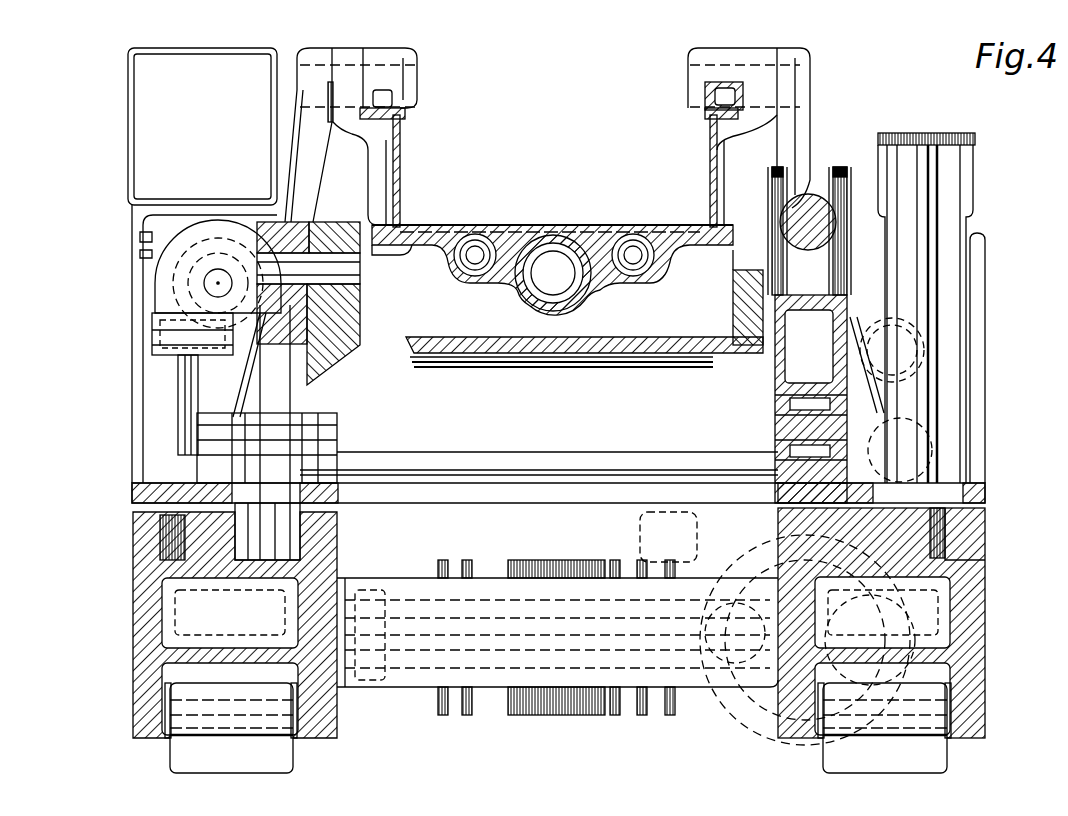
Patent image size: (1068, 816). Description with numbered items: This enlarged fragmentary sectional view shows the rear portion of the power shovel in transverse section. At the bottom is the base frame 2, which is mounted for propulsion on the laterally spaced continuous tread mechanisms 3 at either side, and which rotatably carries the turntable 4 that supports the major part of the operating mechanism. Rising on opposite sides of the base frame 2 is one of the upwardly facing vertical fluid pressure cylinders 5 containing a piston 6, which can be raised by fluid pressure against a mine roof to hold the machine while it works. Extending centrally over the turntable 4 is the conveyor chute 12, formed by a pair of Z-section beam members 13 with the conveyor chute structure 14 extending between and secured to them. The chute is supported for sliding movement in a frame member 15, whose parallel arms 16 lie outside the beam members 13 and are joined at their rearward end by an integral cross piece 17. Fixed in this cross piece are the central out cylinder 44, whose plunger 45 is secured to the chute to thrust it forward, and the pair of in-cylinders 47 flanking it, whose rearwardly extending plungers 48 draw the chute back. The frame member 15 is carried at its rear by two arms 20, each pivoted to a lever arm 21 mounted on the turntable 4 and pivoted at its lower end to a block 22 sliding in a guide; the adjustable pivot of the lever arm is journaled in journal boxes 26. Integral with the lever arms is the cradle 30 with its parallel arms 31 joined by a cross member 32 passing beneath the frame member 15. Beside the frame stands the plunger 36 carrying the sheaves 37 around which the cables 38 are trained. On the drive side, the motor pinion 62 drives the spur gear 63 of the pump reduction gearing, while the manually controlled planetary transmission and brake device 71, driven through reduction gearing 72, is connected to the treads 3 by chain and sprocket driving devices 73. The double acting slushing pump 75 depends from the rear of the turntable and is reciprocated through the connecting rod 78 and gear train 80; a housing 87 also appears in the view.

The base frame 2 is at (340, 700).
The continuous tread mechanisms 3 is at (185, 752).
The turntable 4 is at (132, 493).
The fluid pressure cylinders 5 is at (970, 194).
The pistons 6 is at (960, 135).
The conveyor chute 12 is at (552, 234).
The beam members 13 is at (400, 175).
The conveyor chute structure 14 is at (591, 214).
The frame member 15 is at (422, 248).
The parallel arms 16 is at (415, 82).
The cross piece 17 is at (472, 288).
The arms 20 is at (303, 44).
The lever arm 21 is at (200, 375).
The block 22 is at (775, 425).
The journal boxes 26 is at (180, 410).
The cradle 30 is at (634, 369).
The parallel arms 31 is at (347, 205).
The cross member 32 is at (532, 371).
The plunger 36 is at (810, 192).
The sheaves 37 is at (850, 176).
The cables 38 is at (840, 165).
The fluid pressure cylinder 44 is at (528, 298).
The plunger 45 is at (585, 292).
The fluid pressure cylinders 47 is at (455, 258).
The plungers 48 is at (460, 270).
The motor pinion 62 is at (907, 325).
The spur gear 63 is at (915, 386).
The planetary transmission and brake device 71 is at (547, 692).
The reduction gearing 72 is at (152, 320).
The chain and sprocket driving devices 73 is at (380, 590).
The slushing pump 75 is at (503, 710).
The connecting rod 78 is at (761, 671).
The gear train 80 is at (908, 590).
The control box 87 is at (130, 150).